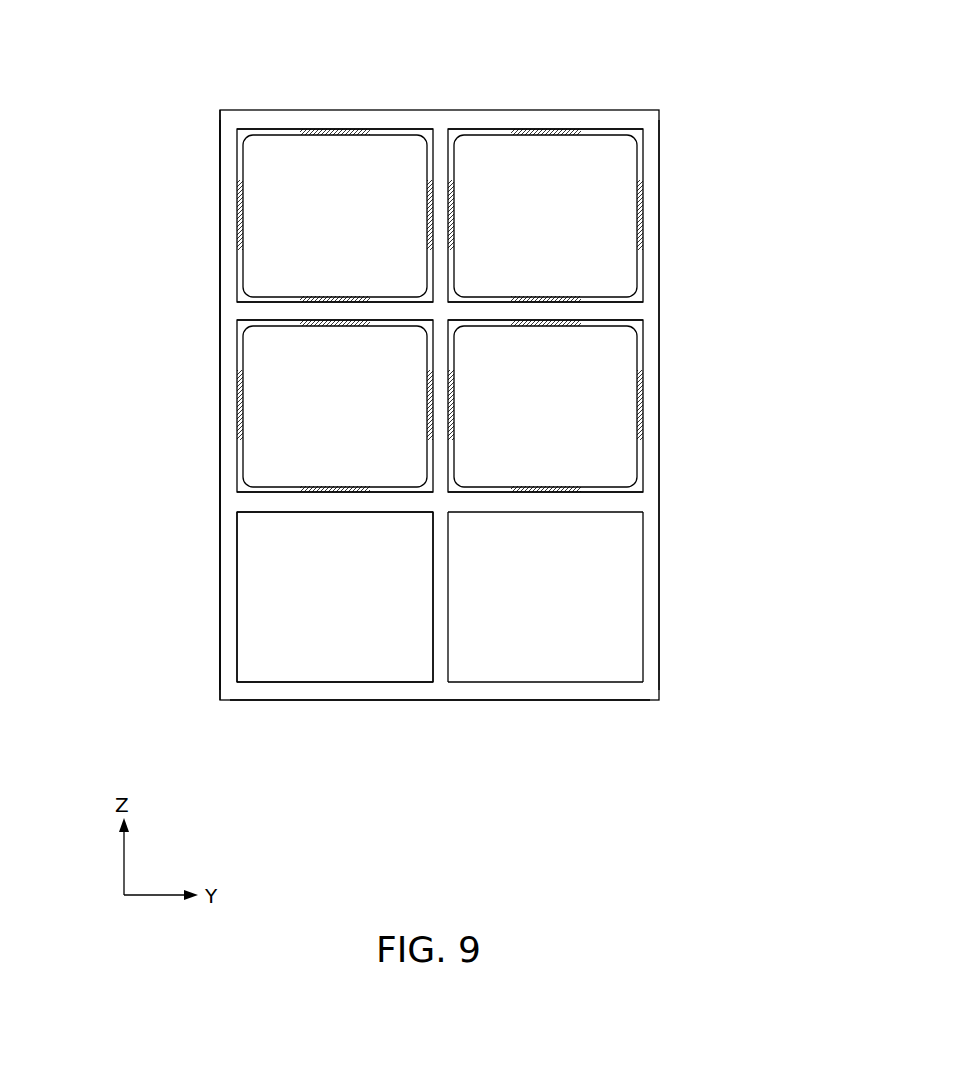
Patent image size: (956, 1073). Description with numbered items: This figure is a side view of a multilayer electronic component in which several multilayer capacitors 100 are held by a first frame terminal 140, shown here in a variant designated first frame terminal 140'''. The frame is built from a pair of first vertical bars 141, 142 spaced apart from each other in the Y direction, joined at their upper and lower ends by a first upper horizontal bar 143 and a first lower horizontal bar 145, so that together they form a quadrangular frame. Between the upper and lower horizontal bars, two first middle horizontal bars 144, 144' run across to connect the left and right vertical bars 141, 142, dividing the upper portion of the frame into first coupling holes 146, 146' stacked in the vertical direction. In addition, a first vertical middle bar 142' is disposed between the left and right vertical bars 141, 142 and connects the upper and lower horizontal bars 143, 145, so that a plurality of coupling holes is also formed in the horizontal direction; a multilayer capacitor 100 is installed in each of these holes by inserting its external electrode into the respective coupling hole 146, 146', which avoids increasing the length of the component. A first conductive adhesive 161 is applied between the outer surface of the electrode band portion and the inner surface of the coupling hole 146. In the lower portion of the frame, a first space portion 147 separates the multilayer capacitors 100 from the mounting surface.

The multilayer capacitor 100 is at (258, 165).
The first frame terminal 140 is at (501, 405).
The first frame terminal 140''' is at (155, 405).
The first vertical bar 141 is at (220, 583).
The first vertical bar 142 is at (710, 405).
The first vertical middle bar 142' is at (475, 646).
The first upper horizontal bar 143 is at (537, 118).
The first middle horizontal bar 144 is at (500, 295).
The first middle horizontal bar 144' is at (512, 513).
The first lower horizontal bar 145 is at (362, 690).
The first coupling hole 146 is at (274, 215).
The first coupling hole 146' is at (265, 413).
The first space portion 147 is at (312, 630).
The first conductive adhesive 161 is at (420, 215).